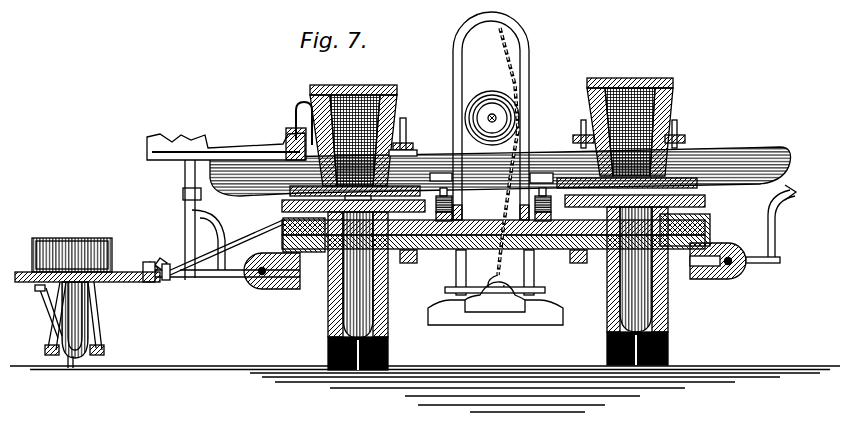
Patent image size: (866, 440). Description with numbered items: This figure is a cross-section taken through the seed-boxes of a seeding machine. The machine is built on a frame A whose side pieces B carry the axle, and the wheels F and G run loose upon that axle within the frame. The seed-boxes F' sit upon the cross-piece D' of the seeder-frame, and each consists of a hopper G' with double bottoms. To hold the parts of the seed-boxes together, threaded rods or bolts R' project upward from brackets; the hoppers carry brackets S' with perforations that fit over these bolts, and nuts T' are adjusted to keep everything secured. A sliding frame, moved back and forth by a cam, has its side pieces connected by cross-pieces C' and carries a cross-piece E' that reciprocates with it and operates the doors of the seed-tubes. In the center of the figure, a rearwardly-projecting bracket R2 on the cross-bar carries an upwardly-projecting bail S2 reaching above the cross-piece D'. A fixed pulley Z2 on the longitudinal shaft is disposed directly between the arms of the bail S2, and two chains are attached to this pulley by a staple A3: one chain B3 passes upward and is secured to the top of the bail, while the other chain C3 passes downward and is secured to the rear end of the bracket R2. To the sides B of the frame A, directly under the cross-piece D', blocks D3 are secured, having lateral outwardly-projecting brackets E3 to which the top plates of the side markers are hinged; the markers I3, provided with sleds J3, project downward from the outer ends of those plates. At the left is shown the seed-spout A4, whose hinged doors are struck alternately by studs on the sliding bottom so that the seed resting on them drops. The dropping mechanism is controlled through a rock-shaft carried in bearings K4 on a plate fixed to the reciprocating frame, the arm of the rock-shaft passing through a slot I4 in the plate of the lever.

The frame of the machine A is at (420, 370).
The nuts T' is at (500, 171).
The slot I4 is at (226, 196).
The bearings K4 is at (292, 131).
The seed-boxes F' is at (353, 148).
The hoppers G' is at (492, 137).
The threaded rods or bolts R' is at (406, 137).
The cross-piece E' is at (541, 123).
The wheel G is at (631, 221).
The cross-pieces C' is at (493, 238).
The wheel F is at (366, 291).
The side pieces B is at (493, 233).
The brackets E3 is at (495, 265).
The blocks D3 is at (494, 243).
The markers I3 is at (172, 291).
The seed-spout A4 is at (88, 300).
The sleds J3 is at (48, 330).
The brackets S' is at (503, 116).
The staple A3 is at (492, 118).
The fixed pulley Z2 is at (484, 99).
The chain or cord B3 is at (502, 160).
The chain or cord C3 is at (493, 204).
The bail S2 is at (421, 261).
The cross-piece of the seeder-frame D' is at (567, 258).
The bracket R2 is at (495, 287).